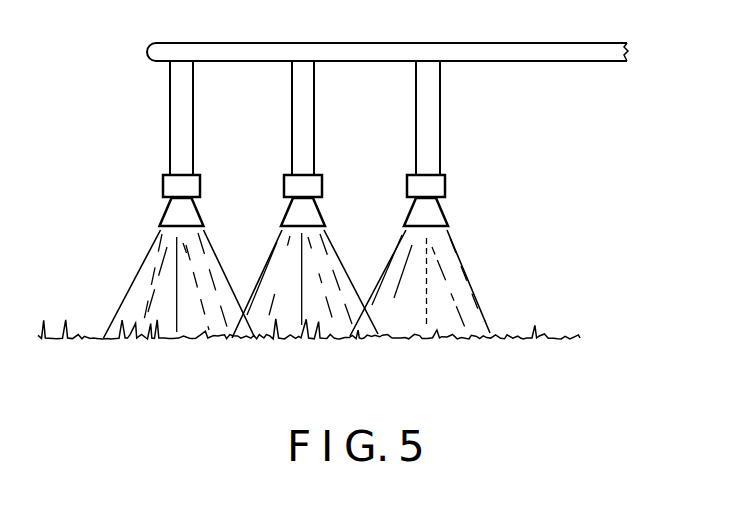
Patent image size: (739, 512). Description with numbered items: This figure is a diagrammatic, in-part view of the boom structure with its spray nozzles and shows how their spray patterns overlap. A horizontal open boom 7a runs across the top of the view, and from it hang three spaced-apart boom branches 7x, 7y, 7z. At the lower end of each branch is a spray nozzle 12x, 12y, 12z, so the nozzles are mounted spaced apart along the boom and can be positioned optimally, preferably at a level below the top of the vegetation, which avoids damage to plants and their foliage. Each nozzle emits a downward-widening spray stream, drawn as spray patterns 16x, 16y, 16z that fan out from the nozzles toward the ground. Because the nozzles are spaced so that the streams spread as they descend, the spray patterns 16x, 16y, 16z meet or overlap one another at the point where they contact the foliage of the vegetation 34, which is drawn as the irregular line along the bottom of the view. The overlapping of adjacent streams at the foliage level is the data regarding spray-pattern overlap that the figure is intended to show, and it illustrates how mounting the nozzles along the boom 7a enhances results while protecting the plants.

The boom 7a is at (244, 46).
The boom branch 7x is at (180, 102).
The boom branch 7y is at (300, 103).
The boom branch 7z is at (425, 103).
The spray nozzle 12x is at (183, 185).
The spray nozzle 12y is at (300, 185).
The spray nozzle 12z is at (425, 187).
The spray pattern 16x is at (187, 315).
The spray pattern 16y is at (312, 320).
The spray pattern 16z is at (420, 302).
The vegetation 34 is at (532, 318).